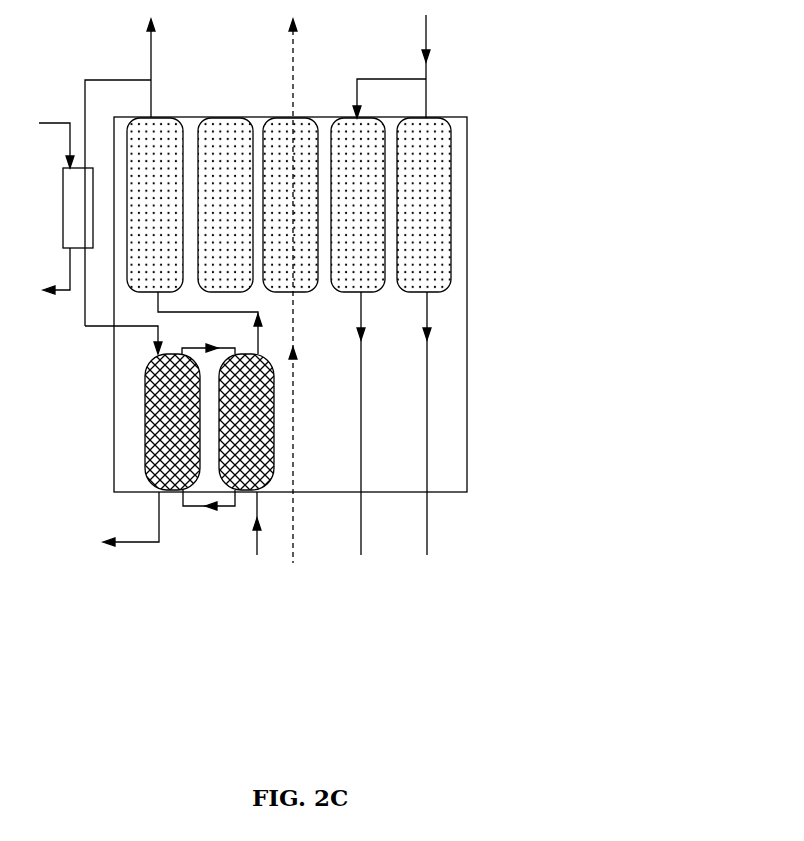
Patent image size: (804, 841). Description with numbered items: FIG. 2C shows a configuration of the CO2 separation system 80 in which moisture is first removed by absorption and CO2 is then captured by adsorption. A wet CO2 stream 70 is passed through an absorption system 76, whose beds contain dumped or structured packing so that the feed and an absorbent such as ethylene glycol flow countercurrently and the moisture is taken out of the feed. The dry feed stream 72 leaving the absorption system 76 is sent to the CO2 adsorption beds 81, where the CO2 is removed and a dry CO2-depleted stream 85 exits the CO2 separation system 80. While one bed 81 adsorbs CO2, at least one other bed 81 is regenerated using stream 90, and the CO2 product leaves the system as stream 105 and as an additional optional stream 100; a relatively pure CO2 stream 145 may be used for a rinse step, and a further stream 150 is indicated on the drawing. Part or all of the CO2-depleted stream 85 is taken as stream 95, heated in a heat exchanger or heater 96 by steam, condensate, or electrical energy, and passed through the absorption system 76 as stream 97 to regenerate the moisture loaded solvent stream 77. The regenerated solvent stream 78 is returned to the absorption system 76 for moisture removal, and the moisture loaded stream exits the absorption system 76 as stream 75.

The wet CO2 stream 70 is at (258, 512).
The dry feed stream 72 is at (256, 312).
The moisture loaded stream 75 is at (135, 542).
The absorption system 76 is at (145, 405).
The moisture loaded solvent stream 77 is at (196, 508).
The regenerated solvent stream 78 is at (194, 348).
The CO2 separation system 80 is at (467, 275).
The CO2 adsorption beds 81 is at (318, 297).
The dry CO2-depleted stream 85 is at (152, 65).
The regeneration stream 90 is at (428, 45).
The CO2-depleted stream portion 95 is at (108, 78).
The heater 96 is at (63, 200).
The heated regeneration stream 97 is at (152, 326).
The optional CO2 product stream 100 is at (363, 520).
The CO2 product stream 105 is at (428, 520).
The pure CO2 stream 145 is at (296, 520).
The centerline (upper) 150 is at (292, 73).